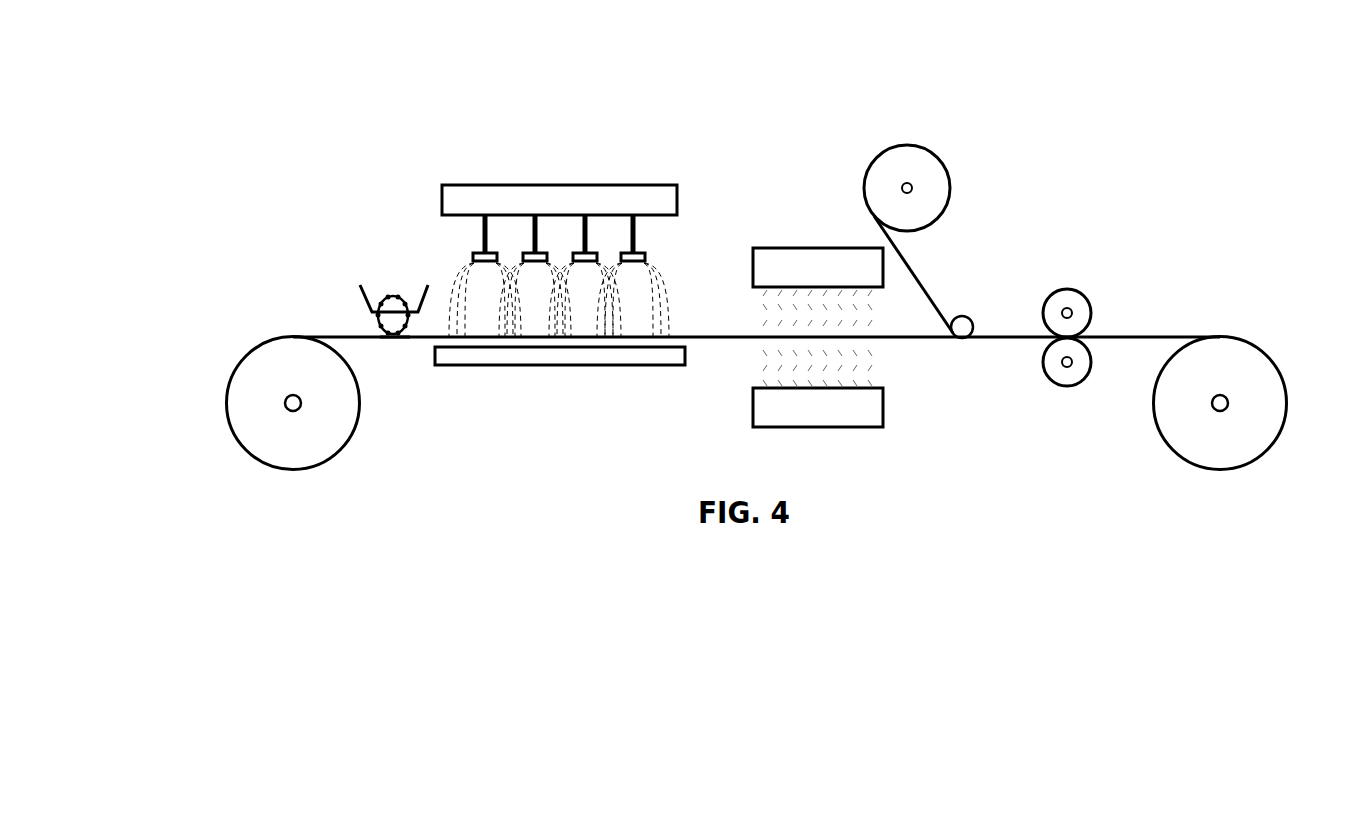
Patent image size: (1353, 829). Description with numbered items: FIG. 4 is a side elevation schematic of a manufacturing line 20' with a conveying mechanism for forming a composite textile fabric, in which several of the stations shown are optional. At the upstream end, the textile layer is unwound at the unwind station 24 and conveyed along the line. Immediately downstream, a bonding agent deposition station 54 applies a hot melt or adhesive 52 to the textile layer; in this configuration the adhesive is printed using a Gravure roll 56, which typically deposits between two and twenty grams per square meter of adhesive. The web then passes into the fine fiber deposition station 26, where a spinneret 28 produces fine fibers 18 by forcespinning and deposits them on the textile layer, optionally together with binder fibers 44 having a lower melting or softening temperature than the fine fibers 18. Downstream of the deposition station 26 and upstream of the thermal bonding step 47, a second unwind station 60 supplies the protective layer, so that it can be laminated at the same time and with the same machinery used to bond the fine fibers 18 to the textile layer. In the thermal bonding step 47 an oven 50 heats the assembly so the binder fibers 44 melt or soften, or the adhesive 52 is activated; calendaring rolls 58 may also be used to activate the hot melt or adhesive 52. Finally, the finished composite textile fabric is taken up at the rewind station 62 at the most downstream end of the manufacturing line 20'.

The manufacturing line 20' is at (495, 207).
The fine fibers 18 is at (533, 232).
The unwind station 24 is at (256, 328).
The deposition station 26 is at (559, 165).
The spinneret 28 is at (631, 263).
The binder fibers 44 is at (521, 222).
The thermal bonding step 47 is at (809, 148).
The oven 50 is at (763, 235).
The adhesive 52 is at (352, 318).
The bonding agent deposition station 54 is at (378, 262).
The Gravure roll 56 is at (393, 338).
The calendaring rolls 58 is at (1069, 268).
The second unwind station 60 is at (911, 128).
The rewind station 62 is at (1249, 320).